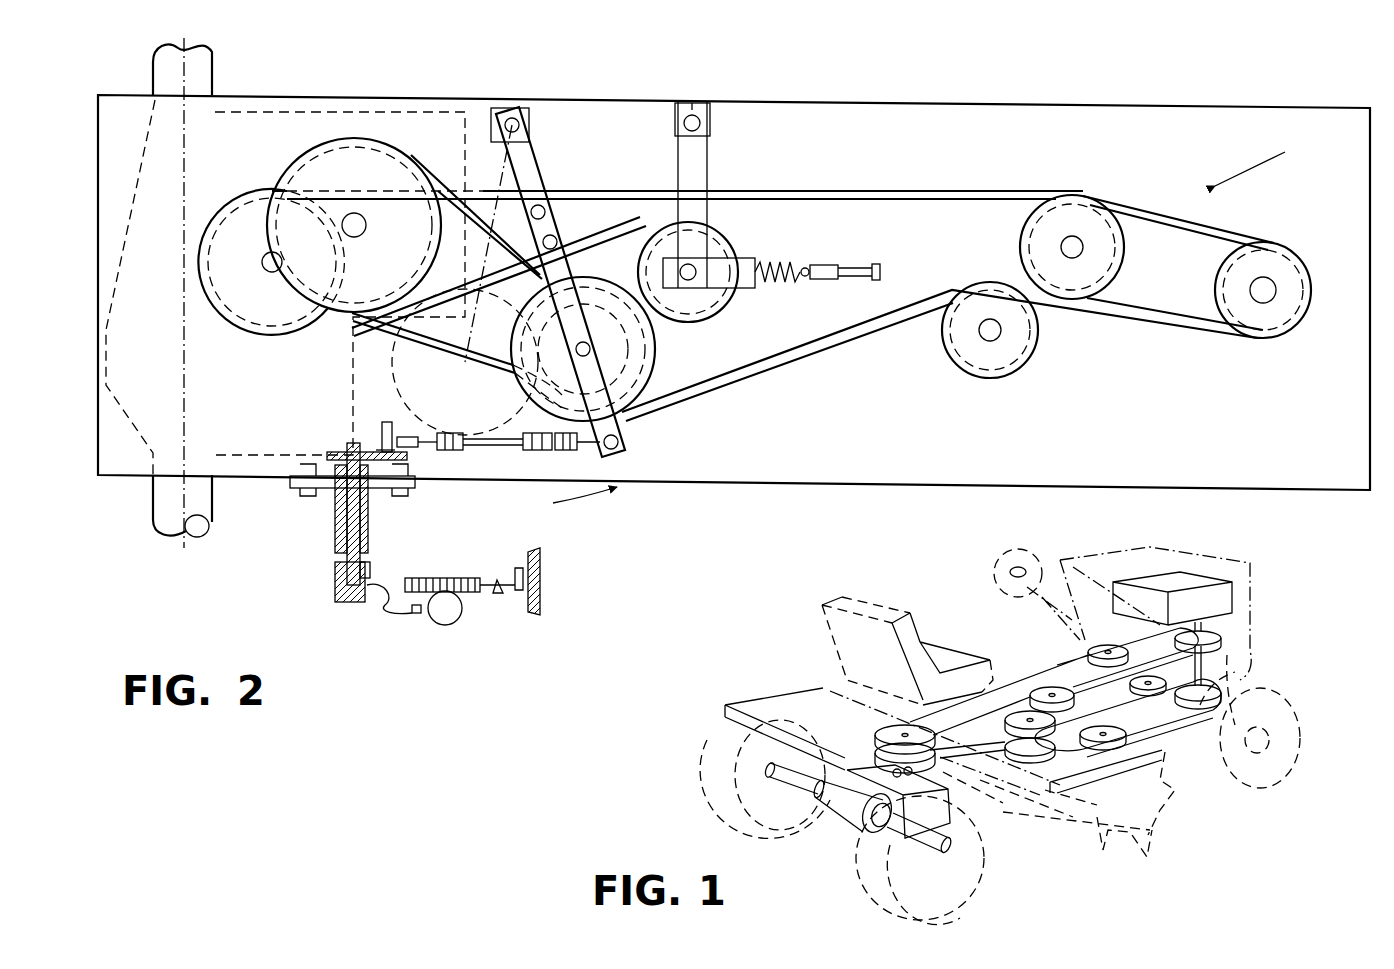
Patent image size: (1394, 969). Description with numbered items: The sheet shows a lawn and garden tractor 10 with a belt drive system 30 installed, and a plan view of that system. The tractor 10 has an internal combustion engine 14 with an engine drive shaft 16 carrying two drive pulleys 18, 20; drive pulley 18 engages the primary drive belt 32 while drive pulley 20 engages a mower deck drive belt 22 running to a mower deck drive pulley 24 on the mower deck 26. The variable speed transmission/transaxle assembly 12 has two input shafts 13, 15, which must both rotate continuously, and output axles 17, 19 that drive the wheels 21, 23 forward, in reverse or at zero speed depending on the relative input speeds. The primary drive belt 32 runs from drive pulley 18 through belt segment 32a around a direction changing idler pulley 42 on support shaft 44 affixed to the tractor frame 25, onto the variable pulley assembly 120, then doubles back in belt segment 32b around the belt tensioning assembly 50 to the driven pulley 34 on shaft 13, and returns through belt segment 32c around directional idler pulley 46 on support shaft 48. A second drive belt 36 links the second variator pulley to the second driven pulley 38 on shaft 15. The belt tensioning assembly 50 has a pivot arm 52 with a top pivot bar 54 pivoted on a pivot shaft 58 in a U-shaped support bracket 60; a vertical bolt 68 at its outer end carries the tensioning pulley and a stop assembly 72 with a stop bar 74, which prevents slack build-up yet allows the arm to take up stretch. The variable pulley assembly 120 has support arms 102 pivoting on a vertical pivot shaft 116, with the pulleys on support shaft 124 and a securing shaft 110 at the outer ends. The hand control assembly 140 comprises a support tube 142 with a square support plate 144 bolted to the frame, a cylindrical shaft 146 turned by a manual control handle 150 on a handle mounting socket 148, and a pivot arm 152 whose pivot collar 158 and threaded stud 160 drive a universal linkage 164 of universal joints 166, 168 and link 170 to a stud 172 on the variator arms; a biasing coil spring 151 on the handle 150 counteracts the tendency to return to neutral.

In FIG. 1, the lawn and garden tractor 10 is at (1008, 727).
In FIG. 2, the variable speed transmission/transaxle assembly 12 is at (258, 108).
In FIG. 1, the variable speed transmission/transaxle assembly 12 is at (869, 830).
In FIG. 2, the first input shaft 13 is at (262, 257).
In FIG. 1, the first input shaft 13 is at (892, 773).
In FIG. 1, the internal combustion engine 14 is at (1218, 598).
In FIG. 2, the second input shaft 15 is at (367, 222).
In FIG. 1, the second input shaft 15 is at (950, 790).
In FIG. 2, the engine drive shaft 16 is at (1272, 282).
In FIG. 1, the engine drive shaft 16 is at (1240, 665).
In FIG. 2, the axle 17 is at (216, 68).
In FIG. 1, the axle 17 is at (775, 782).
In FIG. 2, the drive pulley 18 is at (1279, 274).
In FIG. 1, the drive pulley 18 is at (1232, 636).
In FIG. 2, the axle 19 is at (152, 508).
In FIG. 1, the axle 19 is at (918, 850).
In FIG. 1, the drive pulley 20 is at (1252, 680).
In FIG. 1, the wheels 21 is at (700, 828).
In FIG. 1, the mower deck drive belt 22 is at (1175, 730).
In FIG. 1, the wheels 23 is at (1290, 726).
In FIG. 1, the mower deck drive pulley 24 is at (1090, 745).
In FIG. 2, the tractor frame 25 is at (1044, 106).
In FIG. 1, the mower deck 26 is at (1158, 830).
In FIG. 2, the belt drive system 30 is at (1264, 160).
In FIG. 1, the belt drive system 30 is at (1060, 732).
In FIG. 2, the primary drive belt 32 is at (773, 274).
In FIG. 1, the primary drive belt 32 is at (1045, 668).
In FIG. 2, the belt segment 32a is at (848, 347).
In FIG. 2, the belt segment 32b is at (590, 248).
In FIG. 2, the belt segment 32c is at (776, 186).
In FIG. 2, the driven pulley 34 is at (271, 262).
In FIG. 1, the driven pulley 34 is at (877, 755).
In FIG. 2, the second drive belt 36 is at (365, 322).
In FIG. 2, the second driven pulley 38 is at (354, 225).
In FIG. 1, the second driven pulley 38 is at (877, 730).
In FIG. 2, the direction changing idler pulley 42 is at (990, 380).
In FIG. 1, the direction changing idler pulley 42 is at (1130, 682).
In FIG. 2, the support shaft 44 is at (1013, 346).
In FIG. 2, the directional idler pulley 46 is at (1093, 247).
In FIG. 1, the directional idler pulley 46 is at (1110, 645).
In FIG. 2, the support shaft 48 is at (1085, 247).
In FIG. 2, the belt tensioning assembly 50 is at (722, 262).
In FIG. 1, the belt tensioning assembly 50 is at (1032, 697).
In FIG. 2, the pivot arm 52 is at (762, 172).
In FIG. 2, the top pivot bar 54 is at (710, 160).
In FIG. 2, the pivot shaft 58 is at (712, 127).
In FIG. 2, the U-shaped support bracket 60 is at (693, 103).
In FIG. 2, the vertical bolt 68 is at (700, 282).
In FIG. 2, the stop assembly 72 is at (862, 268).
In FIG. 2, the stop bar 74 is at (752, 263).
In FIG. 2, the support arm 102 is at (541, 282).
In FIG. 2, the securing shaft 110 is at (621, 437).
In FIG. 2, the vertical pivot shaft 116 is at (522, 125).
In FIG. 2, the variable pulley assembly 120 is at (636, 349).
In FIG. 1, the variable pulley assembly 120 is at (1038, 760).
In FIG. 2, the support shaft 124 is at (655, 352).
In FIG. 2, the hand control assembly 140 is at (375, 527).
In FIG. 2, the support tube 142 is at (336, 525).
In FIG. 2, the square support plate 144 is at (298, 488).
In FIG. 2, the cylindrical shaft 146 is at (372, 545).
In FIG. 2, the handle mounting socket 148 is at (345, 605).
In FIG. 2, the manual control handle 150 is at (388, 615).
In FIG. 2, the biasing coil spring 151 is at (450, 580).
In FIG. 2, the pivot arm 152 is at (334, 458).
In FIG. 2, the pivot collar 158 is at (380, 440).
In FIG. 2, the threaded stud 160 is at (405, 435).
In FIG. 2, the universal linkage 164 is at (450, 457).
In FIG. 2, the universal joint 166 is at (400, 460).
In FIG. 2, the universal joint 168 is at (565, 458).
In FIG. 2, the link 170 is at (498, 453).
In FIG. 2, the stud 172 is at (598, 452).